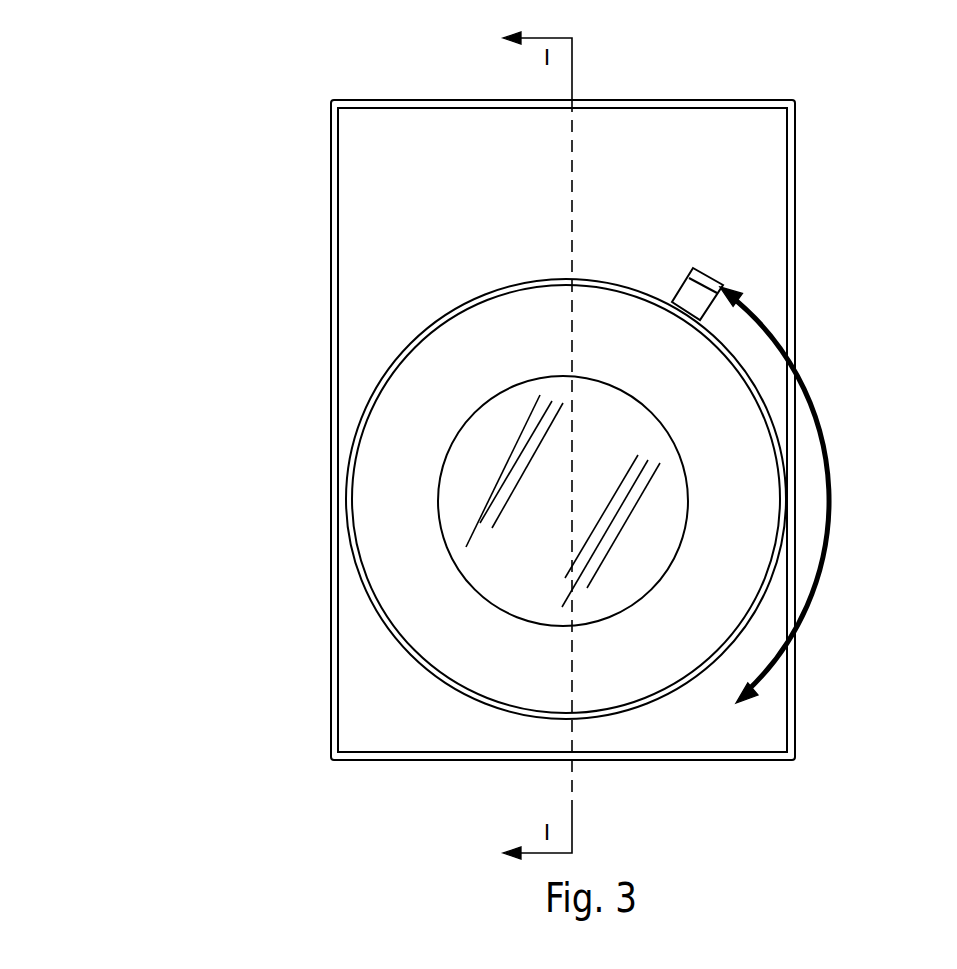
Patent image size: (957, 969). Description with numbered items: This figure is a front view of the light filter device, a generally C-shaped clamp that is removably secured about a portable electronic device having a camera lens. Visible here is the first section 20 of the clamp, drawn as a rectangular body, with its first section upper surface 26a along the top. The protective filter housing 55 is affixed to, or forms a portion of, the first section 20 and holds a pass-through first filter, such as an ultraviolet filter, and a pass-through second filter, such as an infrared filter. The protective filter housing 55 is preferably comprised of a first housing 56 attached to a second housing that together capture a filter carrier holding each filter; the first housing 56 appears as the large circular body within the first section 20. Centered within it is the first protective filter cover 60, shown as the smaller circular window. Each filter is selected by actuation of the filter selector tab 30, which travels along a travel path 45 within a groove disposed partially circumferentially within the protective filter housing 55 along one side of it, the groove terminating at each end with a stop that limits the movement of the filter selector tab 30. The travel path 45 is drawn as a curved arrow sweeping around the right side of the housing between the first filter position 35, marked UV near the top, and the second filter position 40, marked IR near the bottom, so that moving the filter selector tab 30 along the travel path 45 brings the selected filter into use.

The first section 20 is at (392, 302).
The first section upper surface 26a is at (702, 152).
The filter selector tab 30 is at (707, 272).
The first filter position 35 is at (584, 286).
The second filter position 40 is at (600, 708).
The travel path 45 is at (835, 498).
The protective filter housing 55 is at (300, 486).
The first housing 56 is at (435, 623).
The first protective filter cover 60 is at (520, 505).